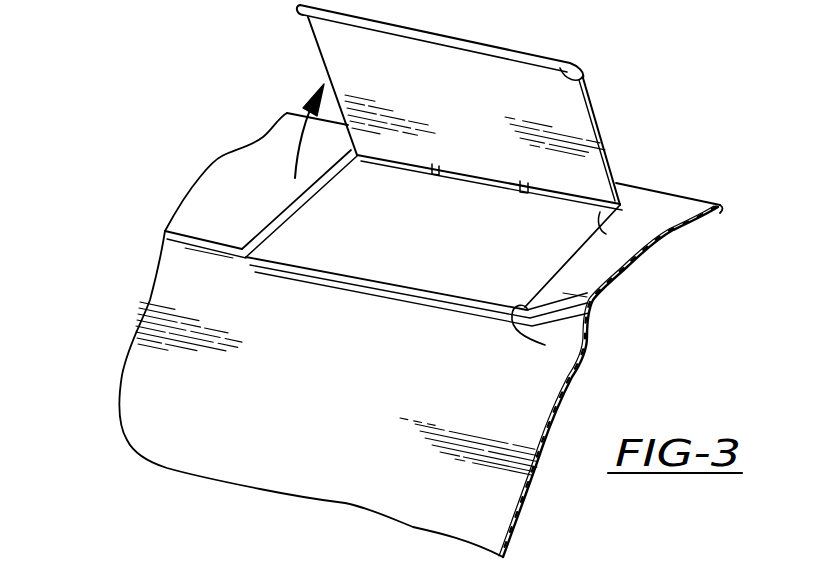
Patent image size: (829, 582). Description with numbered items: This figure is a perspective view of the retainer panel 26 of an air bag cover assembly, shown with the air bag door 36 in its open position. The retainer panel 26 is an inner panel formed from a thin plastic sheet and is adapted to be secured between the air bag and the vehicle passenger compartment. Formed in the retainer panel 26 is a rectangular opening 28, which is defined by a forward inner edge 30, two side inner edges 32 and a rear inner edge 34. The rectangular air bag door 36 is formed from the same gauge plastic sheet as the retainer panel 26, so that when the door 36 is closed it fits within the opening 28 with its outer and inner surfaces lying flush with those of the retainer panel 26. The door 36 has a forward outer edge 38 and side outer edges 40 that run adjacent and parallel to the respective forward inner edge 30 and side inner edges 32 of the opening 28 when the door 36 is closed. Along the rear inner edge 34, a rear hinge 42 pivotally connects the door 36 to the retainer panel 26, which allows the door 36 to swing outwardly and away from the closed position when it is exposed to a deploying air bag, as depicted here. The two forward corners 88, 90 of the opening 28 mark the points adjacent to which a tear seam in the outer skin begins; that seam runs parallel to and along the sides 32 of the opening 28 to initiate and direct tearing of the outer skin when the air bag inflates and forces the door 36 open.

The retainer panel 26 is at (173, 292).
The rectangular opening 28 is at (389, 230).
The forward inner edge 30 is at (405, 280).
The side inner edges 32 is at (297, 203).
The rear inner edge 34 is at (507, 187).
The air bag door 36 is at (571, 103).
The forward outer edge 38 is at (583, 78).
The side outer edges 40 is at (325, 57).
The rear hinge 42 is at (432, 171).
The forward corner 88 is at (250, 242).
The forward corner 90 is at (545, 345).